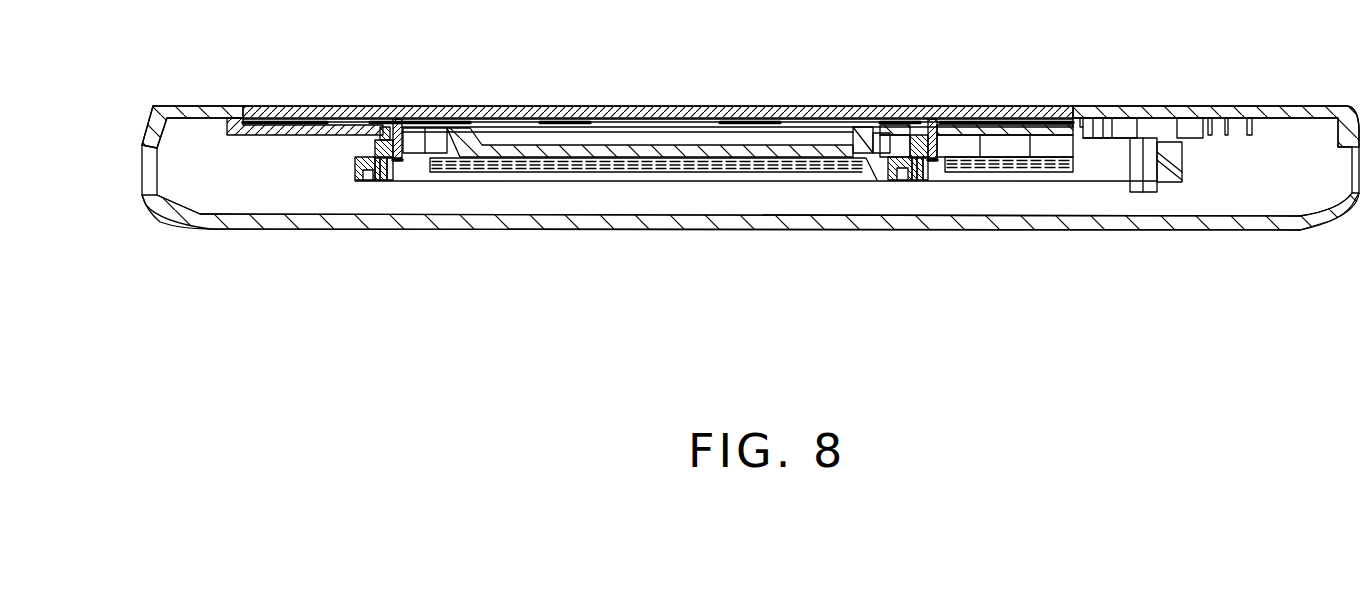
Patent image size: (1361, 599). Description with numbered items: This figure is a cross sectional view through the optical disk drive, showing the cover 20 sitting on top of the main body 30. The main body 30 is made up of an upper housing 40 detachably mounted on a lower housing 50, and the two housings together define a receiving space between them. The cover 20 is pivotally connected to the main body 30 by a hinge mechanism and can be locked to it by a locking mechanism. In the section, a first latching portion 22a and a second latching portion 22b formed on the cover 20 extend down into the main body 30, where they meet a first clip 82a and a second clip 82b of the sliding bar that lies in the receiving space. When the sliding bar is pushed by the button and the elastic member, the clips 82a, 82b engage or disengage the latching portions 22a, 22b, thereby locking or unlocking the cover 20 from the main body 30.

The cover 20 is at (547, 107).
The main body 30 is at (90, 100).
The upper housing 40 is at (153, 112).
The lower housing 50 is at (165, 202).
The first clip 82a is at (393, 127).
The second clip 82b is at (928, 127).
The first latching portion 22a is at (393, 157).
The second latching portion 22b is at (928, 158).